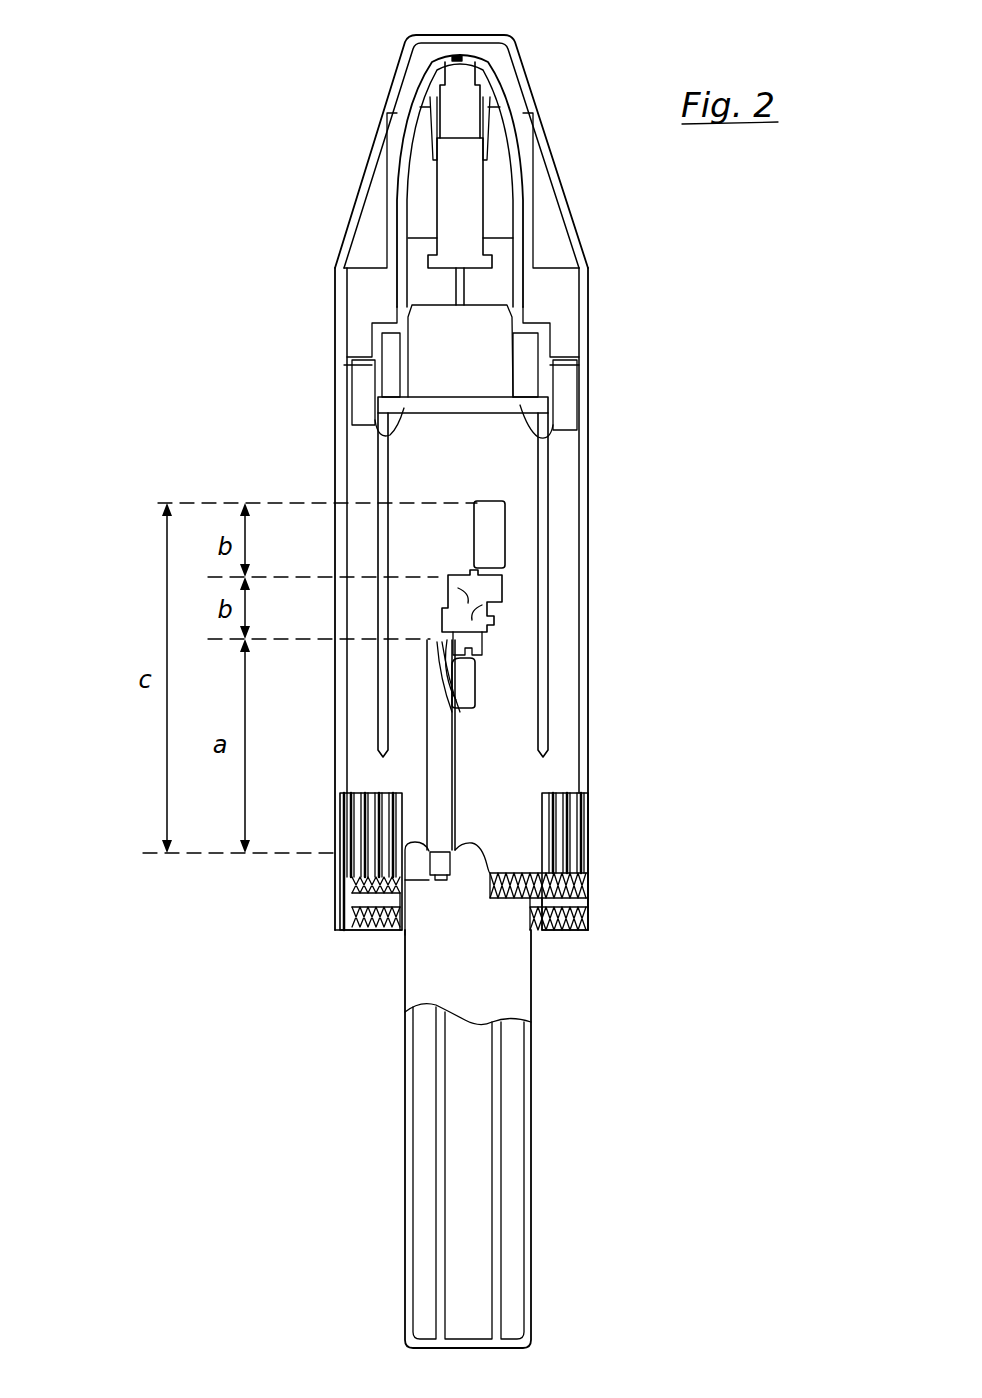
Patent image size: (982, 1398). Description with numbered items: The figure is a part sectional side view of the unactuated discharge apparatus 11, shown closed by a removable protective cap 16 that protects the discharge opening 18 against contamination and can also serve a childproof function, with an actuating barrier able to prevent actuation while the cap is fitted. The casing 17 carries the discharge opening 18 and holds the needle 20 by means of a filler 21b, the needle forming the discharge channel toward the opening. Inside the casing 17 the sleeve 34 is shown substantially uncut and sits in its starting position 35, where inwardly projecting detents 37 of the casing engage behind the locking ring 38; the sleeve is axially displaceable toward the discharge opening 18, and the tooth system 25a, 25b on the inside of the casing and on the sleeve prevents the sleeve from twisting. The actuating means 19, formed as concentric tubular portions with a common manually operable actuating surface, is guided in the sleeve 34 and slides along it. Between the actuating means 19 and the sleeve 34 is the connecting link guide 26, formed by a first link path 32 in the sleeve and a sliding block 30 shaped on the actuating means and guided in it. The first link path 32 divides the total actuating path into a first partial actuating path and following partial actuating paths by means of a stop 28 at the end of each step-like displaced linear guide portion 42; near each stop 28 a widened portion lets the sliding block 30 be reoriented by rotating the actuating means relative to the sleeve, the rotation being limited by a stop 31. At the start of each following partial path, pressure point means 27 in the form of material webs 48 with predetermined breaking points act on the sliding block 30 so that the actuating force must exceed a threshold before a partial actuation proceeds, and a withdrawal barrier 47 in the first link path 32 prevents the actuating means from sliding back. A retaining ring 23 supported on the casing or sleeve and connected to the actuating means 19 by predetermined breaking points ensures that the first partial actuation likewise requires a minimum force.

The discharge apparatus 11 is at (722, 328).
The protective cap 16 is at (385, 128).
The casing 17 is at (335, 393).
The discharge opening 18 is at (454, 44).
The actuating means 19 is at (518, 980).
The needle 20 is at (462, 290).
The filler 21b is at (446, 197).
The retaining ring 23 is at (415, 880).
The tooth system 25a is at (566, 834).
The tooth system 25b is at (584, 890).
The connecting link guide 26 is at (520, 657).
The pressure point means 27 is at (490, 584).
The stop 28 is at (493, 512).
The sliding block 30 is at (446, 880).
The stop 31 is at (484, 607).
The first link path 32 is at (438, 755).
The sleeve 34 is at (476, 471).
The starting position 35 is at (567, 375).
The detents 37 is at (575, 410).
The locking ring 38 is at (553, 438).
The linear guide portion 42 is at (452, 556).
The withdrawal barrier 47 is at (452, 690).
The material webs 48 is at (492, 568).